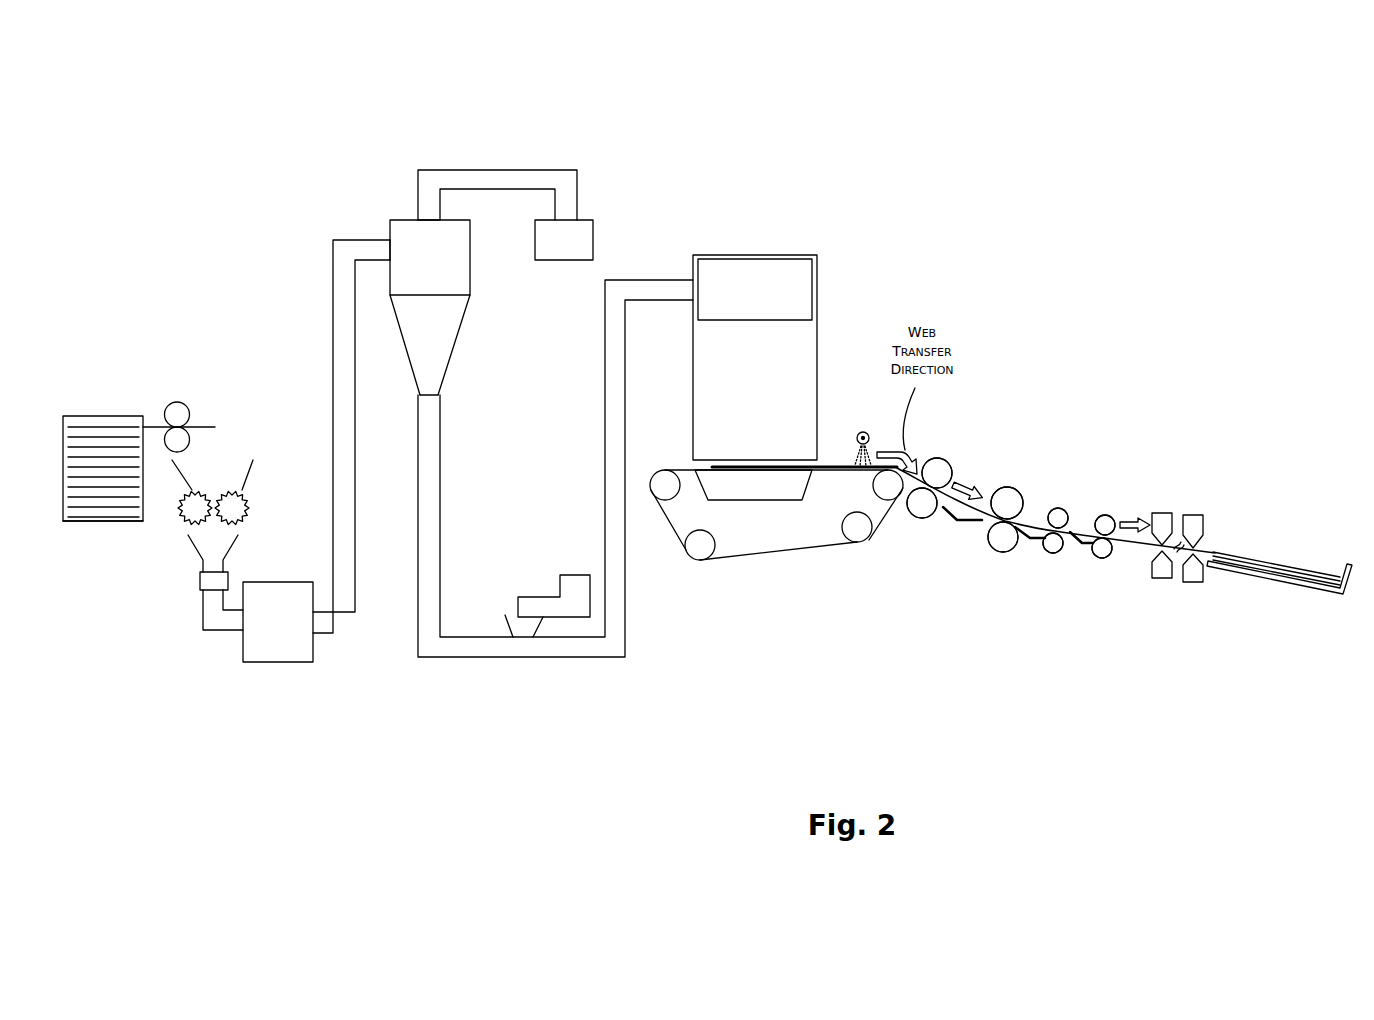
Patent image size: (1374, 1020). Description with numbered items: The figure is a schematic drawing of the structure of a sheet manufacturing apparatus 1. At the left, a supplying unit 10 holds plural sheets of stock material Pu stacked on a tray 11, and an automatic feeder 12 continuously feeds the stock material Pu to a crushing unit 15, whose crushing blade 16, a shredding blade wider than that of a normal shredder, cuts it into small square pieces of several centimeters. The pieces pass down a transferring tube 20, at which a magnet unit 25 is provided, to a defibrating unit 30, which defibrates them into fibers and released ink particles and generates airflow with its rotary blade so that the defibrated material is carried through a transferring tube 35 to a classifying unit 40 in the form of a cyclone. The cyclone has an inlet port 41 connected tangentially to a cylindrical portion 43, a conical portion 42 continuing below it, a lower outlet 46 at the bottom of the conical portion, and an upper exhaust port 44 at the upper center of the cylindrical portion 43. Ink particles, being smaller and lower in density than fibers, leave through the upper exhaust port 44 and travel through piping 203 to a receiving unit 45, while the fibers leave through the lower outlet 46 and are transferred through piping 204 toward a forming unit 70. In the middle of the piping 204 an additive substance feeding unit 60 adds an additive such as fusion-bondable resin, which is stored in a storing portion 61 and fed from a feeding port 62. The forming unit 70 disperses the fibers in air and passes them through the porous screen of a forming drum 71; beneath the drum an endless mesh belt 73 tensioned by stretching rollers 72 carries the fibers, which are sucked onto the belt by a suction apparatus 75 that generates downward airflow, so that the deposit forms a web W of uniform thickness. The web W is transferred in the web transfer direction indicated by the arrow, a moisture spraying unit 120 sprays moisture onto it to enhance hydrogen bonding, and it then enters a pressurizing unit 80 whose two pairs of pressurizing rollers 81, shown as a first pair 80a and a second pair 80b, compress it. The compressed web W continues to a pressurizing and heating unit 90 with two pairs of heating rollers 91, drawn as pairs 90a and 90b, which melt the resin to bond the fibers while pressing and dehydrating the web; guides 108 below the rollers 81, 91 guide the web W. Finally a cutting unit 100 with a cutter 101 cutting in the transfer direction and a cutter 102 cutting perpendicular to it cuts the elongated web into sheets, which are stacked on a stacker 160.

The sheet manufacturing apparatus 1 is at (712, 136).
The supplying unit 10 is at (106, 403).
The tray 11 is at (82, 523).
The automatic feeder 12 is at (159, 402).
The crushing unit 15 is at (260, 467).
The crushing blade 16 is at (243, 512).
The transferring tube 20 is at (203, 607).
The magnet unit 25 is at (200, 583).
The defibrating unit 30 is at (282, 571).
The transferring tube 35 is at (333, 338).
The classifying unit (cyclone) 40 is at (443, 266).
The inlet port 41 is at (397, 240).
The conical portion 42 is at (445, 353).
The cylindrical portion 43 is at (460, 263).
The upper exhaust port 44 is at (410, 228).
The receiving unit 45 is at (607, 210).
The lower outlet 46 is at (432, 390).
The additive substance feeding unit 60 is at (532, 578).
The storing portion 61 is at (577, 585).
The feeding port 62 is at (523, 632).
The forming unit 70 is at (842, 274).
The forming drum 71 is at (750, 270).
The stretching rollers 72 is at (660, 475).
The mesh belt 73 is at (800, 553).
The suction apparatus 75 is at (745, 490).
The pressurizing unit 80 is at (1000, 433).
The first pressurizing unit 80a is at (987, 409).
The second pressurizing unit 80b is at (993, 355).
The pressurizing rollers 81 is at (943, 467).
The pressurizing and heating unit 90 is at (1125, 457).
The first heating unit 90a is at (1100, 451).
The second heating unit 90b is at (1105, 396).
The heating rollers 91 is at (1060, 510).
The cutting unit 100 is at (1187, 601).
The cutter 101 is at (1160, 588).
The cutter 102 is at (1209, 580).
The guides 108 is at (965, 523).
The moisture spraying unit 120 is at (868, 428).
The stacker 160 is at (1286, 599).
The piping 203 is at (508, 168).
The piping 204 is at (605, 437).
The web W is at (838, 465).
The stock material Pu is at (125, 523).